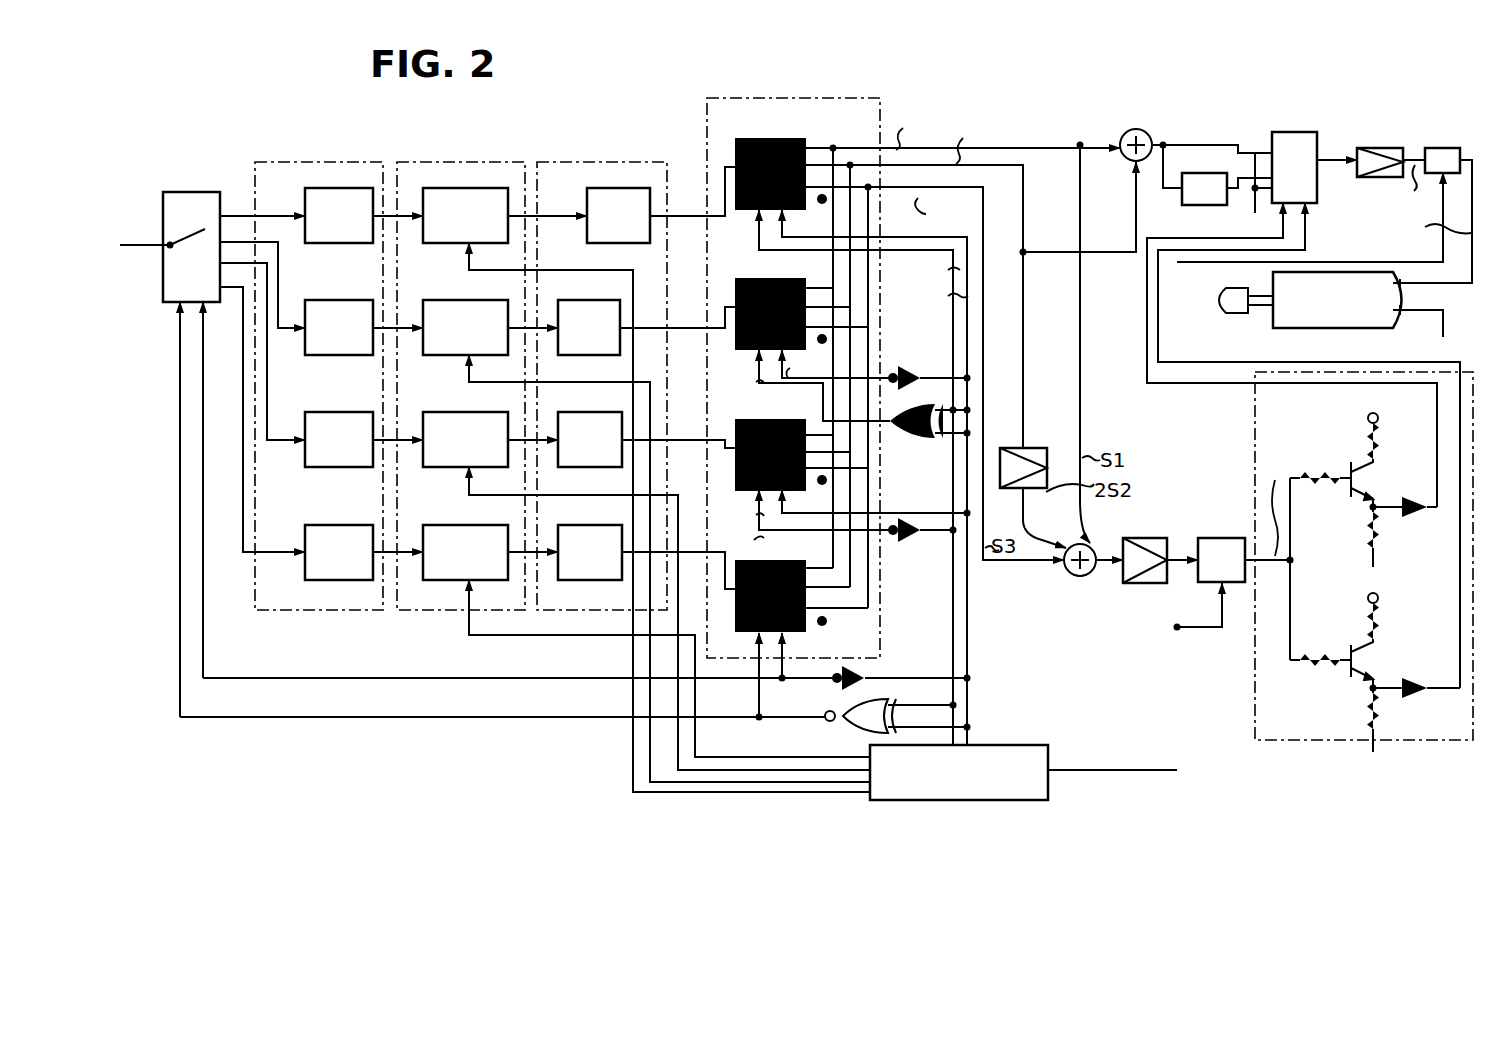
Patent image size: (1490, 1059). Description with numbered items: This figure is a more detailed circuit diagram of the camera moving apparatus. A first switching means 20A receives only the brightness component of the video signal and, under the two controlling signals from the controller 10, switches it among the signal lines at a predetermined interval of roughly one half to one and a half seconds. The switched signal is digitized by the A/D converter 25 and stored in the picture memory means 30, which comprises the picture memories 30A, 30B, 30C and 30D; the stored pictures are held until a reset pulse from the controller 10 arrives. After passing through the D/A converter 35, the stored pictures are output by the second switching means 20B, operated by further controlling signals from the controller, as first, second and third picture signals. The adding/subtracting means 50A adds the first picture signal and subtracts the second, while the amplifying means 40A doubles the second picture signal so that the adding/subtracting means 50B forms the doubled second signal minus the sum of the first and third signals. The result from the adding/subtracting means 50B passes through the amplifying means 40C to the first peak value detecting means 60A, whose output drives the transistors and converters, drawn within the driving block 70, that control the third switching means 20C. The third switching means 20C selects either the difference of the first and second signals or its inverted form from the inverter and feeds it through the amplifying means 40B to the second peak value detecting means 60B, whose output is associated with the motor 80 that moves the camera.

The controller 10 is at (978, 803).
The first switching means 20A is at (190, 194).
The second switching means 20B is at (746, 100).
The third switching means 20C is at (1286, 134).
The A/D converter 25 is at (322, 176).
The picture memory means 30 is at (461, 362).
The picture memory 30A is at (465, 215).
The picture memory 30B is at (465, 327).
The picture memory 30C is at (465, 439).
The picture memory 30D is at (465, 552).
The D/A converter 35 is at (603, 176).
The amplifying means 40A is at (1042, 463).
The amplifying means 40B is at (1376, 148).
The amplifying means 40C is at (1132, 540).
The adding/subtracting means 50A is at (1124, 138).
The adding/subtracting means 50B is at (1083, 578).
The first peak value detecting means 60A is at (1202, 540).
The second peak value detecting means 60B is at (1446, 148).
The motor driving circuit 70 is at (1280, 741).
The motor 80 is at (1300, 328).